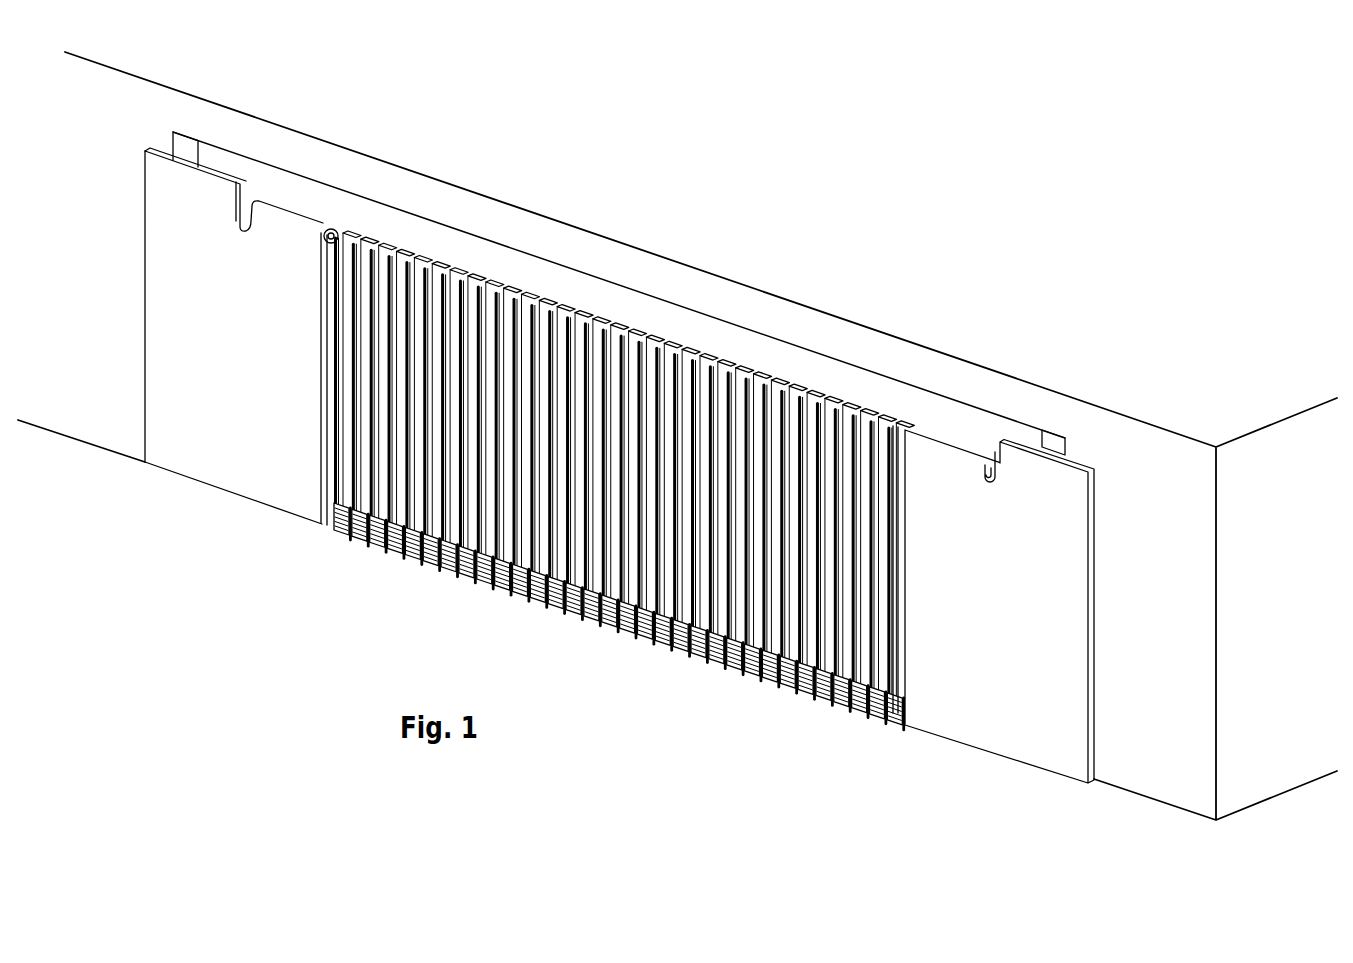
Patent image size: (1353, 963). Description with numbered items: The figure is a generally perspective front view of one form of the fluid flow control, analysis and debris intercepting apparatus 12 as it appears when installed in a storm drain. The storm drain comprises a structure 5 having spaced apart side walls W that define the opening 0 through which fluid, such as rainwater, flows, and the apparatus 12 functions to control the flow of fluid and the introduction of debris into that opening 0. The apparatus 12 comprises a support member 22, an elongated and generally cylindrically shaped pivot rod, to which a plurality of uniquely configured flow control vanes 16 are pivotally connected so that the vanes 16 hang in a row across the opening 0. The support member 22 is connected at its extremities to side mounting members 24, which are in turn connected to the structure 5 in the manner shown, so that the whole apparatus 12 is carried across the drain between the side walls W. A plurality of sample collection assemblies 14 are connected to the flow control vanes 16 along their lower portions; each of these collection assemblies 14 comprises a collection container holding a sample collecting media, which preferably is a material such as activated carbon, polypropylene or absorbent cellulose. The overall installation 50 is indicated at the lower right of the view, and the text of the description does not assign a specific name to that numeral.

The structure 5 is at (1153, 423).
The opening 0 is at (790, 357).
The side walls W is at (190, 147).
The side mounting members 24 is at (238, 465).
The support member 22 is at (324, 218).
The fluid flow control, analysis and debris intercepting apparatus 12 is at (603, 290).
The flow control vanes 16 is at (500, 277).
The sample collection assemblies 14 is at (413, 557).
The installed assembly 50 is at (1163, 826).